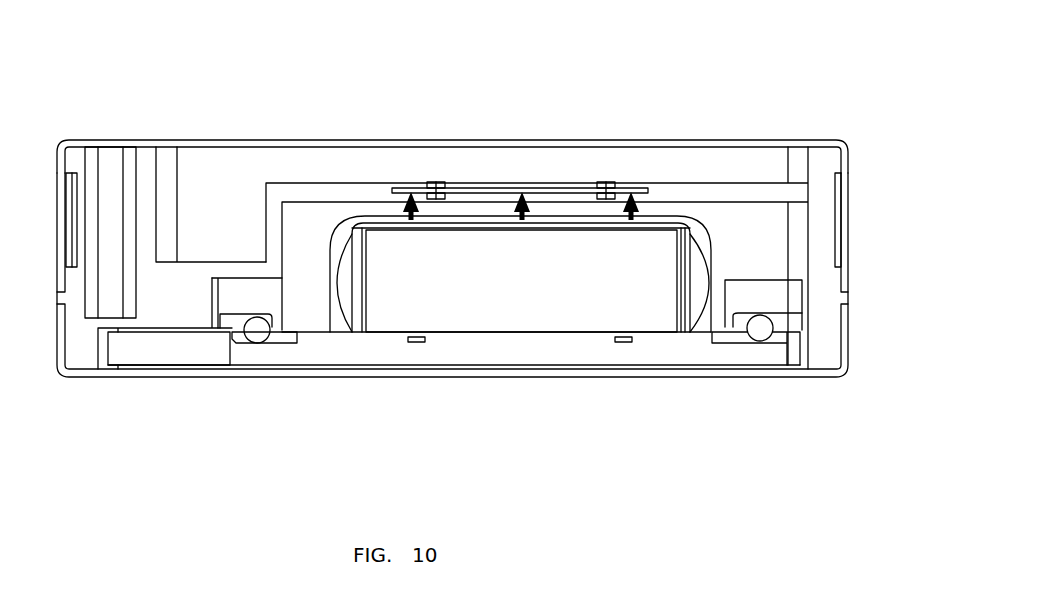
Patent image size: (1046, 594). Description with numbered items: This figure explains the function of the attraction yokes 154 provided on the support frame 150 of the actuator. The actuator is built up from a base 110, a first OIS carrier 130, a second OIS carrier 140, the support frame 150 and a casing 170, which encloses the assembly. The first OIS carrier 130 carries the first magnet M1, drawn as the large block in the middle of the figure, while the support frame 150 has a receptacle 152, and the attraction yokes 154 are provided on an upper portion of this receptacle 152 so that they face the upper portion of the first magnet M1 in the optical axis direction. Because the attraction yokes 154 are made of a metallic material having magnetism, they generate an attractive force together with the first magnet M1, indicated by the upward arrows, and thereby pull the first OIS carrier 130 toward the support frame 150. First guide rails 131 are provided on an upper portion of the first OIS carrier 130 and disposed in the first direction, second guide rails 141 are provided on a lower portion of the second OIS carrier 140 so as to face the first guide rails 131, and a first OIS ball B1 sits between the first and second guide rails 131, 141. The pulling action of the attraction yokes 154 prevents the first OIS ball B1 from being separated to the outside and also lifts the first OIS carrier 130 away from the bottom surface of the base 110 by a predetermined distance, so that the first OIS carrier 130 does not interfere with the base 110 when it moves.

The base 110 is at (434, 378).
The first OIS carrier 130 is at (140, 345).
The first guide rails 131 is at (283, 338).
The second OIS carrier 140 is at (788, 295).
The second guide rails 141 is at (229, 320).
The support frame 150 is at (192, 280).
The receptacle 152 is at (717, 193).
The attraction yokes 154 is at (493, 190).
The casing 170 is at (304, 147).
The first OIS ball B1 is at (760, 338).
The first magnet M1 is at (496, 279).